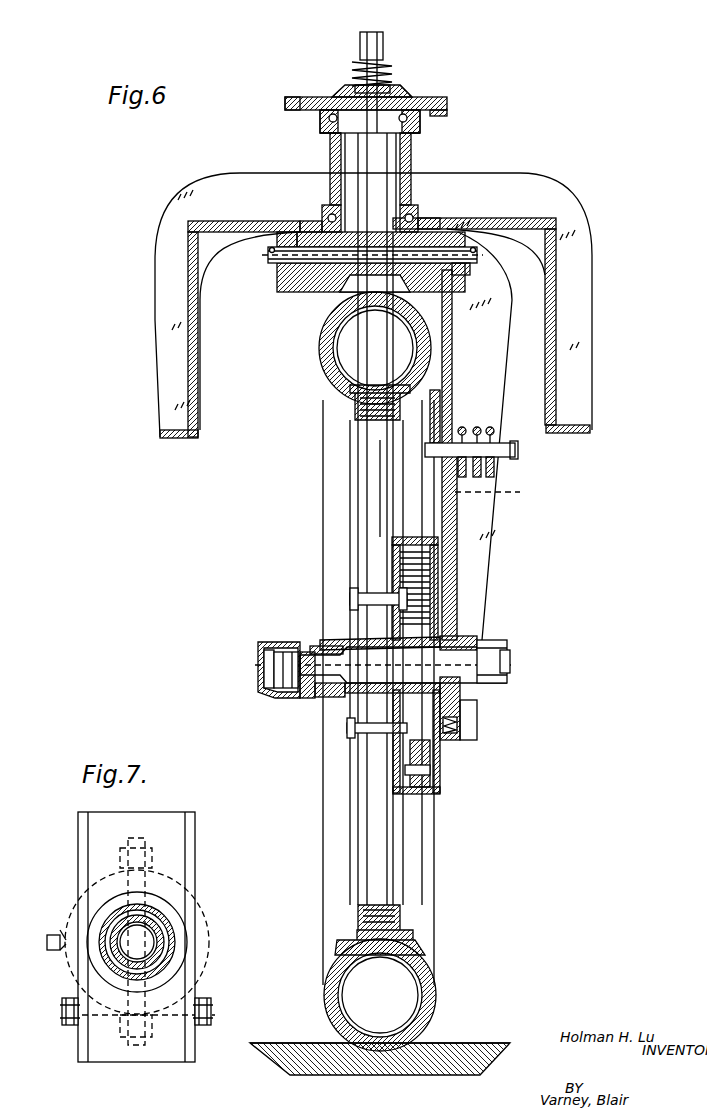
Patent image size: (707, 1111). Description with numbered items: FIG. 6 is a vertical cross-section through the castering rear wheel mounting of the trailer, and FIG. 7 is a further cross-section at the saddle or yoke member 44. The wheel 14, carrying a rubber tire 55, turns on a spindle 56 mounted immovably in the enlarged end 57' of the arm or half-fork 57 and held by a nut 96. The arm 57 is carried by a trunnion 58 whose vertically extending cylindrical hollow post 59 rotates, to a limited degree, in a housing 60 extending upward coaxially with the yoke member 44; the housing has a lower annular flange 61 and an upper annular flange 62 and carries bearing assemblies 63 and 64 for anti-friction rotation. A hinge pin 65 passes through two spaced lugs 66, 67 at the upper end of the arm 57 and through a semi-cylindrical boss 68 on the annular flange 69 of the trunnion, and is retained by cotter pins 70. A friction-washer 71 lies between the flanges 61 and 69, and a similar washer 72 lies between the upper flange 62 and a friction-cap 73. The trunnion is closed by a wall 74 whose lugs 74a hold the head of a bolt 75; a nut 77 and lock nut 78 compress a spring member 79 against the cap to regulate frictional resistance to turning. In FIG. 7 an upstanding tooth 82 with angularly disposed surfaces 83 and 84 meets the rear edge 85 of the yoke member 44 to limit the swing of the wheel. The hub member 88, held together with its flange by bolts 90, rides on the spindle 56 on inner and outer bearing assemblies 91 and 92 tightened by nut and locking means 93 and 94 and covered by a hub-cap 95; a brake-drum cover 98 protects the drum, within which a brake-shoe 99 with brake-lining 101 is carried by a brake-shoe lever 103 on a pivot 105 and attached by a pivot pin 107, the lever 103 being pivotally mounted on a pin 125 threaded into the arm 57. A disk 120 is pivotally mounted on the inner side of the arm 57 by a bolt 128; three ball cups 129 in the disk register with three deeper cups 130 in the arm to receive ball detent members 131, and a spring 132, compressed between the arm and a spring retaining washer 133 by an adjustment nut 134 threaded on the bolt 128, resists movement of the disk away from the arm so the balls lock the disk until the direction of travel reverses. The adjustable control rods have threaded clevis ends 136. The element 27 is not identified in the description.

In FIG. 6, the wheel 14 is at (430, 902).
In FIG. 6, the operating rod 27 is at (396, 551).
In FIG. 6, the saddle or yoke member 44 is at (575, 303).
In FIG. 7, the saddle or yoke member 44 is at (190, 852).
In FIG. 6, the rubber tire 55 is at (320, 358).
In FIG. 6, the spindle 56 is at (352, 697).
In FIG. 6, the arm or half-fork 57 is at (492, 436).
In FIG. 6, the enlarged end of arm 57' is at (487, 717).
In FIG. 6, the trunnion 58 is at (382, 165).
In FIG. 6, the cylindrical hollow post 59 is at (392, 186).
In FIG. 7, the cylindrical hollow post 59 is at (165, 920).
In FIG. 6, the housing 60 is at (332, 156).
In FIG. 7, the housing 60 is at (165, 952).
In FIG. 6, the lower annular flange 61 is at (420, 212).
In FIG. 7, the lower annular flange 61 is at (196, 934).
In FIG. 6, the upper annular flange 62 is at (440, 114).
In FIG. 6, the lower bearing assembly 63 is at (330, 222).
In FIG. 6, the upper bearing assembly 64 is at (330, 97).
In FIG. 6, the hinge pin 65 is at (478, 262).
In FIG. 7, the hinge pin 65 is at (140, 838).
In FIG. 6, the lug 66 is at (466, 276).
In FIG. 7, the lug 66 is at (152, 1035).
In FIG. 6, the lug 67 is at (278, 284).
In FIG. 7, the lug 67 is at (153, 858).
In FIG. 6, the semi-cylindrical boss 68 is at (312, 224).
In FIG. 6, the annular flange 69 is at (436, 224).
In FIG. 6, the cotter pins 70 is at (270, 265).
In FIG. 6, the friction-washer 71 is at (305, 226).
In FIG. 6, the friction-washer 72 is at (430, 100).
In FIG. 6, the friction-cap 73 is at (406, 95).
In FIG. 6, the wall 74 is at (320, 131).
In FIG. 6, the lugs 74a is at (332, 140).
In FIG. 6, the bolt 75 is at (382, 86).
In FIG. 6, the nut 77 is at (360, 50).
In FIG. 6, the lock nut 78 is at (374, 42).
In FIG. 6, the spring member 79 is at (360, 68).
In FIG. 7, the tooth or prong 82 is at (47, 945).
In FIG. 7, the angularly disposed surface 83 is at (62, 932).
In FIG. 7, the angularly disposed surface 84 is at (62, 952).
In FIG. 7, the rear edge of yoke member 85 is at (85, 905).
In FIG. 6, the hub member 88 is at (420, 640).
In FIG. 6, the bolts 90 is at (370, 590).
In FIG. 6, the inner bearing assembly 91 is at (478, 640).
In FIG. 6, the outer bearing assembly 92 is at (305, 700).
In FIG. 6, the nut 93 is at (288, 652).
In FIG. 6, the locking means 94 is at (268, 650).
In FIG. 6, the hub-cap 95 is at (258, 666).
In FIG. 6, the nut 96 is at (508, 650).
In FIG. 6, the brake-drum cover 98 is at (438, 552).
In FIG. 6, the brake-shoe 99 is at (442, 790).
In FIG. 6, the brake-lining 101 is at (437, 796).
In FIG. 6, the brake-shoe lever 103 is at (410, 750).
In FIG. 6, the pivot 105 is at (458, 727).
In FIG. 6, the pivot pin 107 is at (432, 770).
In FIG. 6, the disk 120 is at (454, 372).
In FIG. 6, the pin 125 is at (445, 750).
In FIG. 6, the bolt 128 is at (479, 428).
In FIG. 6, the ball cups 129 is at (452, 515).
In FIG. 6, the cups 130 is at (442, 400).
In FIG. 6, the ball detent members 131 is at (501, 492).
In FIG. 6, the spring 132 is at (492, 428).
In FIG. 6, the spring retaining washer 133 is at (496, 472).
In FIG. 6, the adjustment nut 134 is at (516, 450).
In FIG. 7, the clevis ends 136 is at (62, 1016).